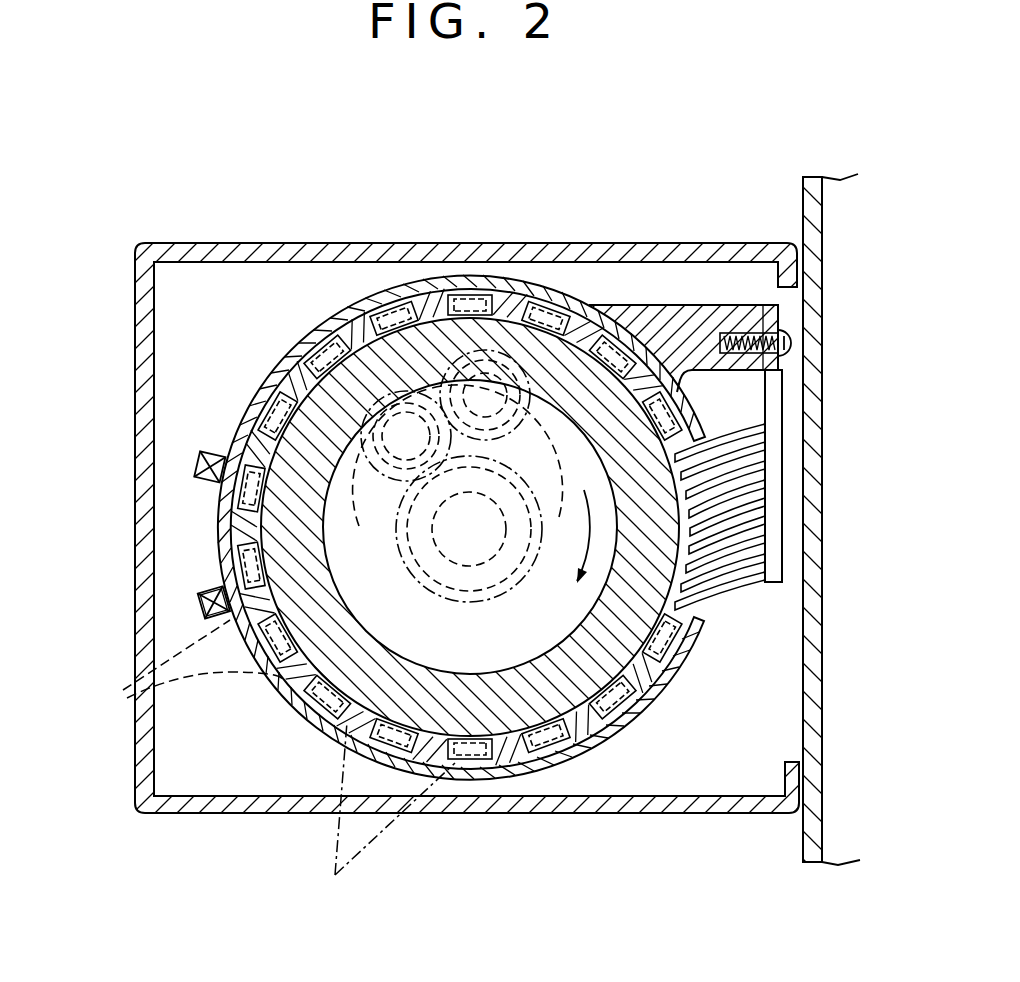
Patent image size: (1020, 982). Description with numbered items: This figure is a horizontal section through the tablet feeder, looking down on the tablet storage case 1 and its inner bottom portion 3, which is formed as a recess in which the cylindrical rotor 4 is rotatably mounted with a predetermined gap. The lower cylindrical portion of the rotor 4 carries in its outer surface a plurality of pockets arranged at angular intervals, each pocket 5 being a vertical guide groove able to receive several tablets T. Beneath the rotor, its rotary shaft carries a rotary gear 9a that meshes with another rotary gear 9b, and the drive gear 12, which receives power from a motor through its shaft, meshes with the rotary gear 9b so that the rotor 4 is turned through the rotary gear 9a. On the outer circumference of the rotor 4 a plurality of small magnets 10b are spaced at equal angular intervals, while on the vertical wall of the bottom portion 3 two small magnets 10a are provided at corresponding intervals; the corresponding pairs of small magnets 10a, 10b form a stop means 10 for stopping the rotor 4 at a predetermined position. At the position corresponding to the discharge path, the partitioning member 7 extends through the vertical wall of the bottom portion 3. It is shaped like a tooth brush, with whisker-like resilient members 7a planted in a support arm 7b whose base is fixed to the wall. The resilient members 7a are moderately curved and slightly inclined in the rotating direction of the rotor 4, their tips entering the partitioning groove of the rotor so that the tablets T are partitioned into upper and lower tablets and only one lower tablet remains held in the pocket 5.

The tablet storage case 1 is at (471, 240).
The inner bottom portion 3 is at (248, 418).
The cylindrical rotor 4 is at (540, 695).
The pocket 5 is at (336, 340).
The partitioning member 7 is at (790, 475).
The whisker-like resilient members 7a is at (727, 593).
The support arm 7b is at (771, 512).
The rotary gear 9a is at (462, 598).
The rotary gear 9b is at (448, 448).
The stop means 10 is at (195, 588).
The small magnets 10a is at (206, 613).
The small magnets 10b is at (168, 667).
The drive gear 12 is at (562, 520).
The tablets T is at (389, 818).